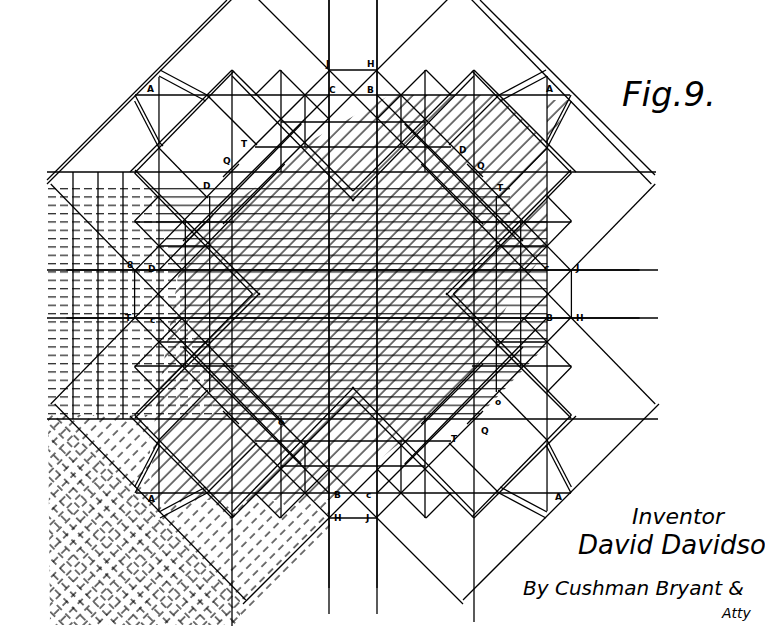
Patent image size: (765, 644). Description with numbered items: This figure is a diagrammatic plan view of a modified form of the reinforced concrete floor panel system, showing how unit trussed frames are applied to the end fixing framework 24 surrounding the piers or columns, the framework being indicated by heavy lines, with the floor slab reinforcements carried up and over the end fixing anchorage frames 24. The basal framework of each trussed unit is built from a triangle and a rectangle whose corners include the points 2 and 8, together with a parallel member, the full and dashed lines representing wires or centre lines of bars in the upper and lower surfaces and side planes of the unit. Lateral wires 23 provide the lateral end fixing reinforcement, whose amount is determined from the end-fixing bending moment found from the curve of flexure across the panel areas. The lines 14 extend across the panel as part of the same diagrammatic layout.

The base lines 14 is at (45, 294).
The end fixing framework 24 is at (197, 28).
The lateral wires 23 is at (122, 193).
The rectangle corner point 2 is at (351, 295).
The rectangle corner point 8 is at (351, 292).